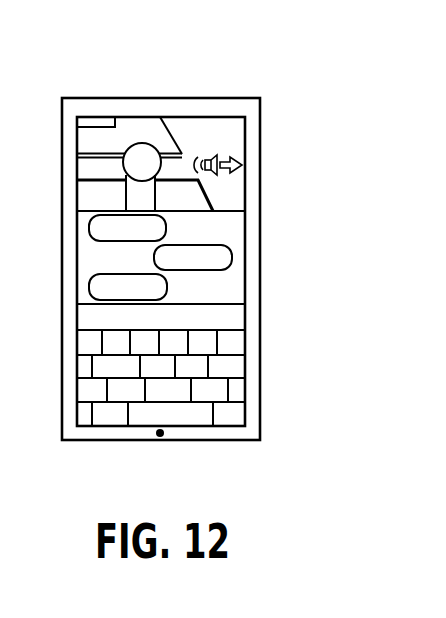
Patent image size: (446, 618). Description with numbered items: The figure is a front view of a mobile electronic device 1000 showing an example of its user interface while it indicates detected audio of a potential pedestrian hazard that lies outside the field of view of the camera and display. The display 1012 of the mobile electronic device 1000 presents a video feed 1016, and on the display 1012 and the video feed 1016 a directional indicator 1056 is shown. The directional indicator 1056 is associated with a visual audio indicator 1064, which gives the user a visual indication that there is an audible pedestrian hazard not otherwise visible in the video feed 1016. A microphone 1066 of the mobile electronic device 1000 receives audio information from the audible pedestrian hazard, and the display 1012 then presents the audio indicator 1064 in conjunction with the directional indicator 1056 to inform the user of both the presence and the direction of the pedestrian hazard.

The mobile electronic device 1000 is at (217, 252).
The display 1012 is at (213, 265).
The video feed 1016 is at (205, 239).
The directional indicator 1056 is at (238, 158).
The visual audio indicator 1064 is at (206, 157).
The microphone 1066 is at (163, 437).